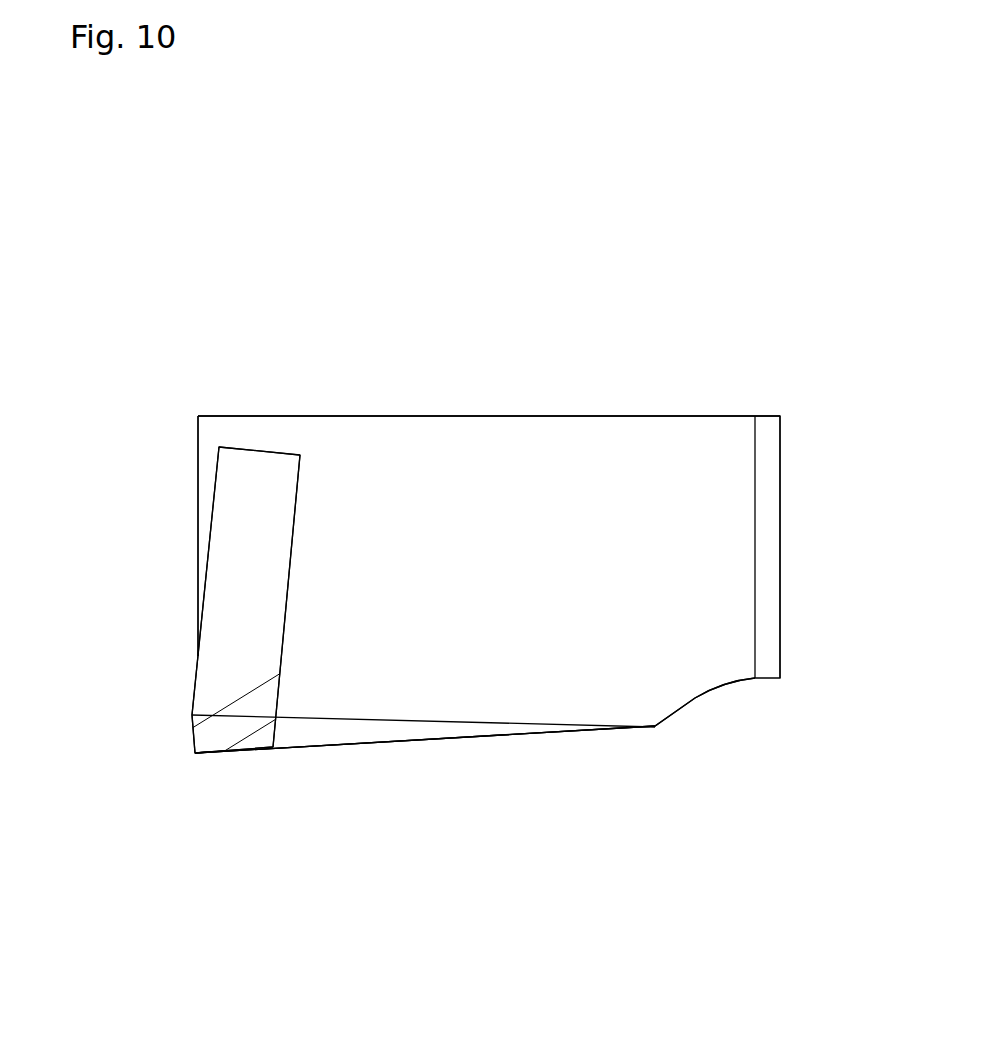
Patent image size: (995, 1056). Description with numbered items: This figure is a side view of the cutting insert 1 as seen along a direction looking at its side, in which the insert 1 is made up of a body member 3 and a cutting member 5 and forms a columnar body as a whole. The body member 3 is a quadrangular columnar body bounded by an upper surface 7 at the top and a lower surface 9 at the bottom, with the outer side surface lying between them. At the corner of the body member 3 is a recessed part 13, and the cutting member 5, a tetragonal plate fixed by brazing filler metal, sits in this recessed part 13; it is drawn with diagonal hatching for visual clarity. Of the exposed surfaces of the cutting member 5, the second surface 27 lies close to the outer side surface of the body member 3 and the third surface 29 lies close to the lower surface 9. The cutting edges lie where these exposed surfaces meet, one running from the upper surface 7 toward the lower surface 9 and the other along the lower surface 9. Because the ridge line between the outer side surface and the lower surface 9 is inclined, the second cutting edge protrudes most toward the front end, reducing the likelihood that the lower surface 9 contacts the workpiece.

The insert 1 is at (259, 298).
The body member 3 is at (401, 518).
The cutting member 5 is at (255, 513).
The upper surface 7 is at (563, 415).
The lower surface 9 is at (440, 740).
The recessed part 13 is at (283, 430).
The second surface 27 is at (242, 685).
The third surface 29 is at (228, 755).